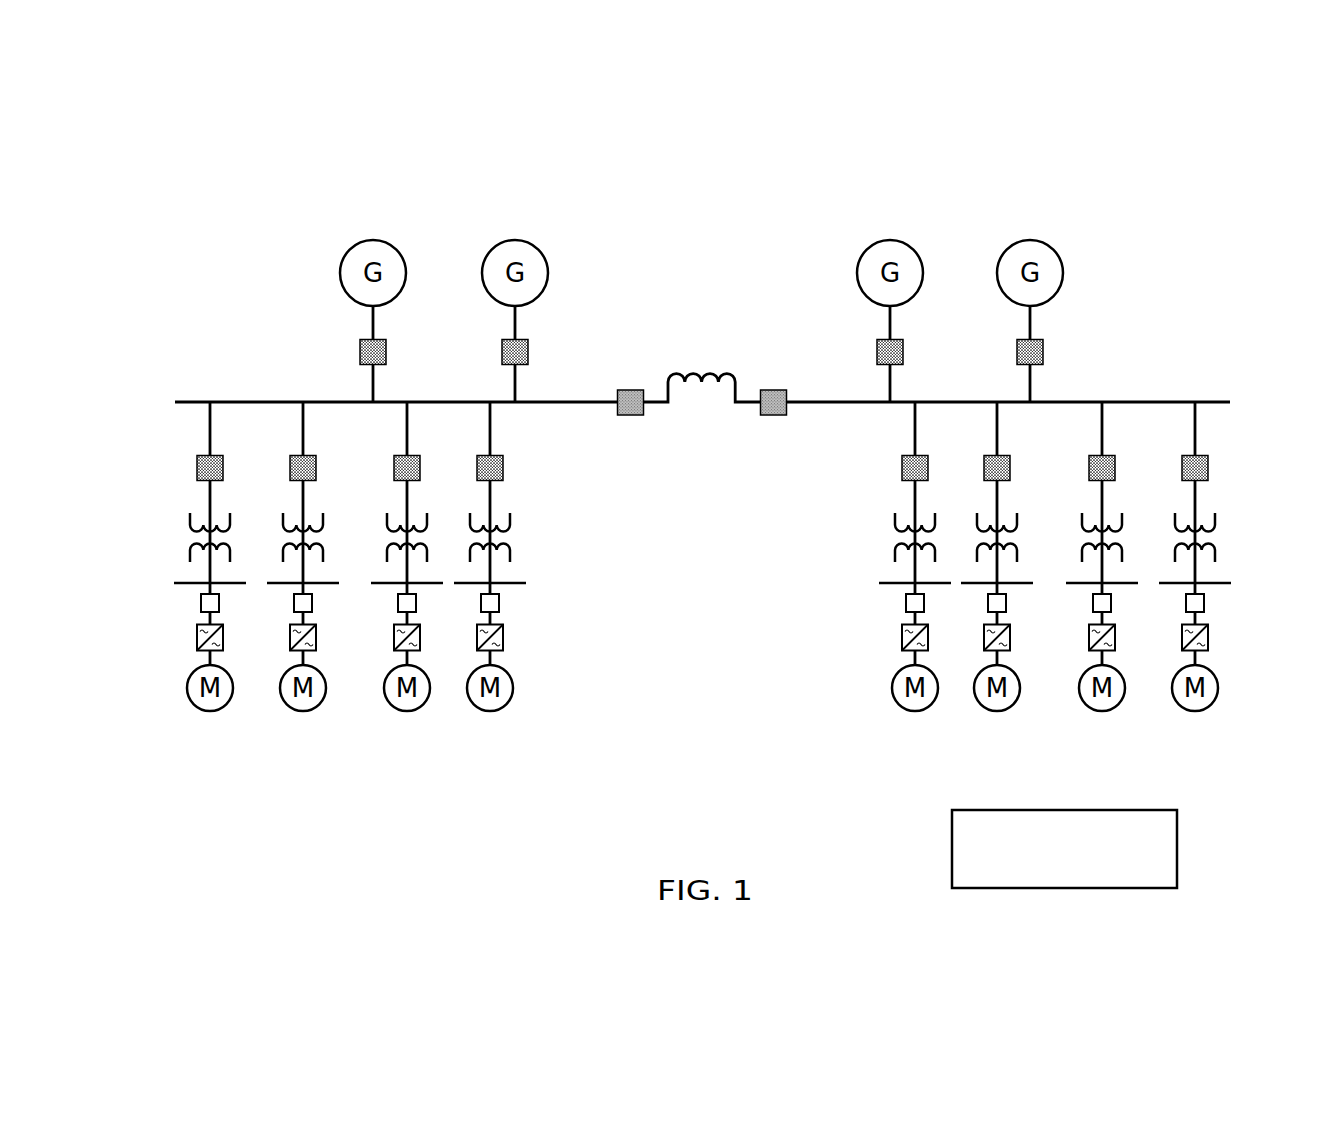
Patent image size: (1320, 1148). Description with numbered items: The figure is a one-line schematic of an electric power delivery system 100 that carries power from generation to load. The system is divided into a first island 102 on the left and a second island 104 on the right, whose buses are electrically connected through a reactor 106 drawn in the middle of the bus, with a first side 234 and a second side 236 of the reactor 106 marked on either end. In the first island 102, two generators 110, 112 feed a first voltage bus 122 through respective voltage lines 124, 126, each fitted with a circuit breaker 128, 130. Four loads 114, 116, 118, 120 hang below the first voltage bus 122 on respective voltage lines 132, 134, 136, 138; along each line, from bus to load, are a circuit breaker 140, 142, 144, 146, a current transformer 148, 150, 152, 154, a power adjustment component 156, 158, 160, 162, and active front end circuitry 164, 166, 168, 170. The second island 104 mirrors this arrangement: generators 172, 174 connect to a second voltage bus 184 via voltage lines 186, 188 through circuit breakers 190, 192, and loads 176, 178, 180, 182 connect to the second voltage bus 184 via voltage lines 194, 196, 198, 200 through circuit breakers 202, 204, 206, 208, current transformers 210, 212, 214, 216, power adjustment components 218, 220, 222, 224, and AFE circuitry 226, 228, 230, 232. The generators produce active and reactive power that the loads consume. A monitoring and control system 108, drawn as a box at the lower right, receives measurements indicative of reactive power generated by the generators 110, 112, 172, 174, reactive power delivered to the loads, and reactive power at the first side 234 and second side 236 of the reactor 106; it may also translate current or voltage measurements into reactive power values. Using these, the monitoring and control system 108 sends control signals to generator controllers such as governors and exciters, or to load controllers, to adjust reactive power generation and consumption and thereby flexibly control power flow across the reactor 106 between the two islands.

The electric power delivery system 100 is at (735, 136).
The first island 102 is at (668, 210).
The second island 104 is at (1230, 210).
The reactor 106 is at (762, 433).
The monitoring and control system 108 is at (952, 852).
The generator 110 is at (340, 274).
The generator 112 is at (482, 274).
The load 114 is at (210, 711).
The load 116 is at (303, 711).
The load 118 is at (407, 711).
The load 120 is at (490, 711).
The first voltage bus 122 is at (195, 402).
The voltage line 124 is at (373, 327).
The voltage line 126 is at (515, 327).
The circuit breaker 128 is at (360, 354).
The circuit breaker 130 is at (502, 354).
The voltage line 132 is at (210, 432).
The voltage line 134 is at (303, 432).
The voltage line 136 is at (407, 432).
The voltage line 138 is at (490, 432).
The circuit breaker 140 is at (197, 469).
The circuit breaker 142 is at (290, 469).
The circuit breaker 144 is at (394, 469).
The circuit breaker 146 is at (503, 469).
The current transformer 148 is at (190, 520).
The current transformer 150 is at (283, 518).
The current transformer 152 is at (387, 518).
The current transformer 154 is at (510, 520).
The power adjustment component 156 is at (201, 603).
The power adjustment component 158 is at (294, 603).
The power adjustment component 160 is at (398, 603).
The power adjustment component 162 is at (499, 603).
The active front end circuitry 164 is at (197, 638).
The active front end circuitry 166 is at (290, 638).
The active front end circuitry 168 is at (394, 638).
The active front end circuitry 170 is at (503, 638).
The generator 172 is at (857, 274).
The generator 174 is at (997, 274).
The load 176 is at (915, 711).
The load 178 is at (997, 711).
The load 180 is at (1102, 711).
The load 182 is at (1195, 711).
The second voltage bus 184 is at (1207, 402).
The voltage line 186 is at (890, 327).
The voltage line 188 is at (1030, 327).
The circuit breaker 190 is at (877, 354).
The circuit breaker 192 is at (1017, 354).
The voltage line 194 is at (915, 432).
The voltage line 196 is at (997, 432).
The voltage line 198 is at (1102, 432).
The voltage line 200 is at (1195, 432).
The circuit breaker 202 is at (902, 469).
The circuit breaker 204 is at (1010, 469).
The circuit breaker 206 is at (1115, 469).
The circuit breaker 208 is at (1208, 469).
The current transformer 210 is at (895, 520).
The current transformer 212 is at (1017, 518).
The current transformer 214 is at (1122, 518).
The current transformer 216 is at (1215, 520).
The power adjustment component 218 is at (906, 603).
The power adjustment component 220 is at (1006, 603).
The power adjustment component 222 is at (1111, 603).
The power adjustment component 224 is at (1204, 603).
The active front end circuitry 226 is at (902, 638).
The active front end circuitry 228 is at (1010, 638).
The active front end circuitry 230 is at (1115, 638).
The active front end circuitry 232 is at (1208, 638).
The first side of the reactor 234 is at (630, 390).
The second side of the reactor 236 is at (773, 390).